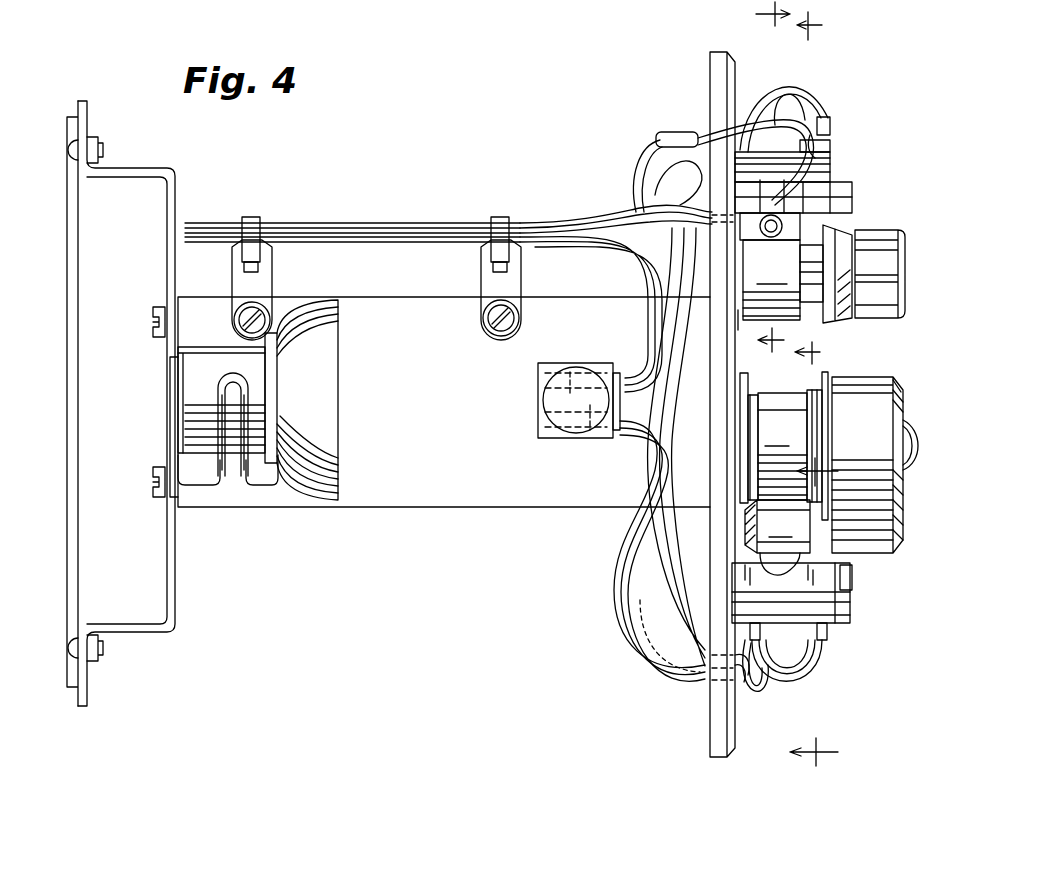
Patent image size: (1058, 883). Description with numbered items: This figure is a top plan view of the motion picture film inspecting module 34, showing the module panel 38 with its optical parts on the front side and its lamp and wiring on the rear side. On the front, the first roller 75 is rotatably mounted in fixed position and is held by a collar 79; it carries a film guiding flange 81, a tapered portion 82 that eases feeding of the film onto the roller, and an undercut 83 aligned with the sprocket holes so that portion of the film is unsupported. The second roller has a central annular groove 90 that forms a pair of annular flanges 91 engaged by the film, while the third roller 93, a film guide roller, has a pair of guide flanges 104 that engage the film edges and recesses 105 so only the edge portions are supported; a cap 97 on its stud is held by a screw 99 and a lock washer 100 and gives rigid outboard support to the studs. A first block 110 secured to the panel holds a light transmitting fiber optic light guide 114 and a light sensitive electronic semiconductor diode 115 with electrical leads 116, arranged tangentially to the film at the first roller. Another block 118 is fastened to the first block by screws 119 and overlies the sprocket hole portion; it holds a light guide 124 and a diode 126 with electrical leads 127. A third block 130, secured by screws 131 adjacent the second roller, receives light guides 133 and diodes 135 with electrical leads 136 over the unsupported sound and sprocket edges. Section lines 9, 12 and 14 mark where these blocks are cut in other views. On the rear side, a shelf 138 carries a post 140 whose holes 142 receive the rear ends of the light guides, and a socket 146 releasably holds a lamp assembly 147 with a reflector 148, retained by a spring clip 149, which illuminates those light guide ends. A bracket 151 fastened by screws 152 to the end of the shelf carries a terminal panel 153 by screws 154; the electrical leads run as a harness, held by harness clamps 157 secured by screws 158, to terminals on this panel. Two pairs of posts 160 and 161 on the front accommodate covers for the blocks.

The section line 9 is at (761, 179).
The section line 12 is at (825, 191).
The section line 14 is at (832, 607).
The motion picture film inspecting module 34 is at (478, 531).
The module panel 38 is at (712, 705).
The first roller 75 is at (781, 266).
The collar 79 is at (882, 320).
The film guiding flange 81 is at (733, 327).
The tapered portion 82 is at (836, 320).
The undercut 83 is at (813, 243).
The annular groove 90 is at (777, 526).
The annular flanges 91 is at (802, 561).
The third roller 93 is at (790, 446).
The cap 97 is at (885, 380).
The screw 99 is at (912, 434).
The lock washer 100 is at (907, 466).
The guide flanges 104 is at (743, 376).
The recesses 105 is at (771, 396).
The first block 110 is at (778, 158).
The light transmitting fiber optic light guide 114 is at (658, 313).
The light sensitive electronic semiconductor diode 115 is at (757, 242).
The electrical leads 116 is at (672, 236).
The block 118 is at (827, 158).
The screws 119 is at (836, 173).
The light transmitting fiber optic light guide 124 is at (644, 310).
The light sensitive electronic semiconductor diode 126 is at (822, 140).
The electrical leads 127 is at (825, 117).
The third block 130 is at (826, 580).
The screws 131 is at (852, 586).
The light transmitting fiber optic light guides 133 is at (652, 543).
The light sensitive electronic semiconductor diodes 135 is at (759, 631).
The electrical leads 136 is at (812, 668).
The shelf 138 is at (515, 495).
The post 140 is at (550, 440).
The holes 142 is at (575, 372).
The socket 146 is at (233, 458).
The lamp assembly 147 is at (196, 389).
The reflector 148 is at (334, 393).
The spring clip 149 is at (203, 473).
The bracket 151 is at (172, 588).
The screws 152 is at (153, 322).
The terminal panel 153 is at (72, 556).
The screws 154 is at (62, 149).
The harness clamps 157 is at (267, 283).
The screws 158 is at (242, 318).
The posts 160 is at (843, 202).
The posts 161 is at (843, 612).